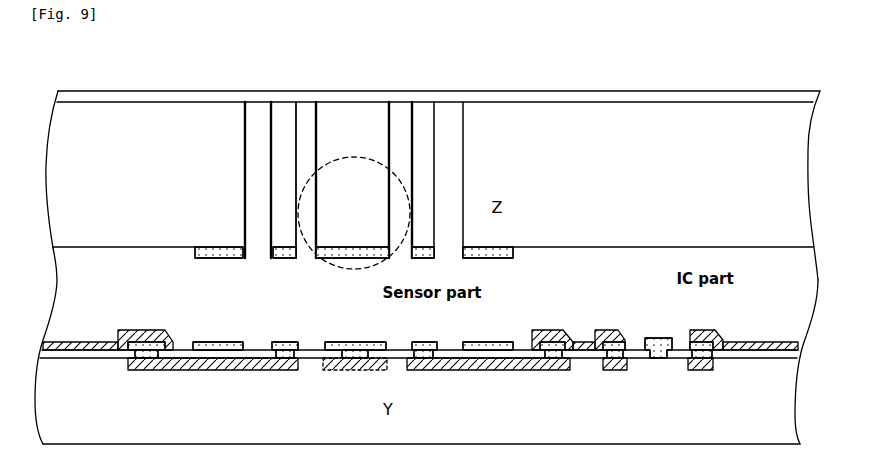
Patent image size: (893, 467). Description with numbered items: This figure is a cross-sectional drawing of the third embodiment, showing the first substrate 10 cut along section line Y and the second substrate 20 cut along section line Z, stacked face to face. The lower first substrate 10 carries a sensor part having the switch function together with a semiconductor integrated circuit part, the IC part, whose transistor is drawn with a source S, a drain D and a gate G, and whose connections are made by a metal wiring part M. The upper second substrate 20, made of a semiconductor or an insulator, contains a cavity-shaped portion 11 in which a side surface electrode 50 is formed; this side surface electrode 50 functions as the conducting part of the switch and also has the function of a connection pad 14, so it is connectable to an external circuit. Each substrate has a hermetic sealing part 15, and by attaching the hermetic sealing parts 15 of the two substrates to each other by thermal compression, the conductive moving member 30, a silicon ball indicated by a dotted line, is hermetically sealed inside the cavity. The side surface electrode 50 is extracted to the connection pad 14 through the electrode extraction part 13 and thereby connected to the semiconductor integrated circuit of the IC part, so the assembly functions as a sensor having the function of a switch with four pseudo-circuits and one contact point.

The first substrate 10 is at (716, 432).
The cavity-shaped portion 11 is at (445, 118).
The electrode extraction part 13 is at (221, 370).
The connection pad 14 is at (143, 342).
The hermetic sealing part 15 is at (220, 258).
The second substrate 20 is at (672, 157).
The moving member 30 is at (354, 213).
The side surface electrode 50 is at (285, 108).
The metal wiring part M is at (83, 342).
The gate G is at (657, 338).
The drain D is at (618, 371).
The source S is at (701, 371).